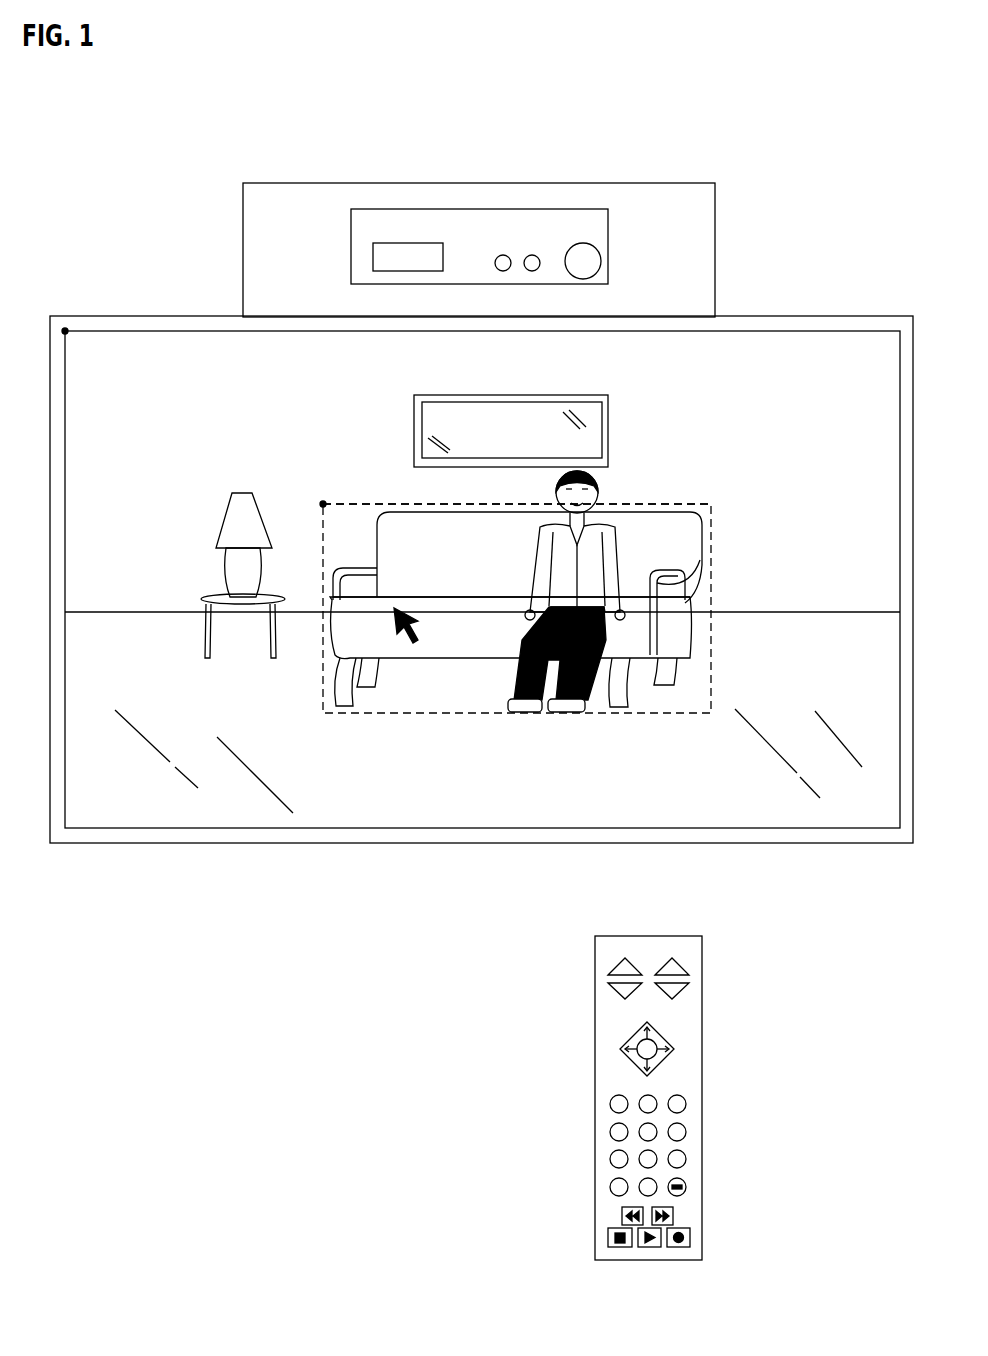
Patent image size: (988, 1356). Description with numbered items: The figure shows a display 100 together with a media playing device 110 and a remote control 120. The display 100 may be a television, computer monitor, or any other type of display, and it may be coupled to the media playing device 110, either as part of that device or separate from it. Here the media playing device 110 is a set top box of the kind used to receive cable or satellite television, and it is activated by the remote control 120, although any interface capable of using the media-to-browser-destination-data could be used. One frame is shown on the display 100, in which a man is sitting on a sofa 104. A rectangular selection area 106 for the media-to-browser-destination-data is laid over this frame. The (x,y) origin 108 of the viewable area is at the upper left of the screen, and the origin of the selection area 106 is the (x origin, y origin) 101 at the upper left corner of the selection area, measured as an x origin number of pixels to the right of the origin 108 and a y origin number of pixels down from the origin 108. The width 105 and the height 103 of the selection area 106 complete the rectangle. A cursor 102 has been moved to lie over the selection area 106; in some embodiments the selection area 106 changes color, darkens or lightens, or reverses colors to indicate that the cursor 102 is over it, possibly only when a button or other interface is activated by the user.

The display 100 is at (132, 899).
The (x origin, y origin) 101 is at (320, 503).
The cursor 102 is at (404, 619).
The height 103 is at (714, 505).
The sofa 104 is at (652, 531).
The width 105 is at (712, 718).
The selection area 106 is at (416, 503).
The (x,y) origin 108 is at (90, 352).
The media playing device 110 is at (424, 173).
The remote control 120 is at (666, 1302).